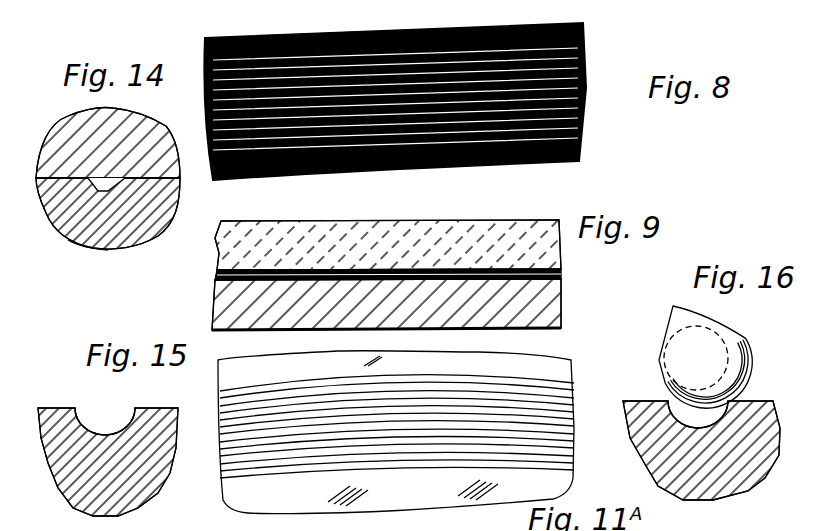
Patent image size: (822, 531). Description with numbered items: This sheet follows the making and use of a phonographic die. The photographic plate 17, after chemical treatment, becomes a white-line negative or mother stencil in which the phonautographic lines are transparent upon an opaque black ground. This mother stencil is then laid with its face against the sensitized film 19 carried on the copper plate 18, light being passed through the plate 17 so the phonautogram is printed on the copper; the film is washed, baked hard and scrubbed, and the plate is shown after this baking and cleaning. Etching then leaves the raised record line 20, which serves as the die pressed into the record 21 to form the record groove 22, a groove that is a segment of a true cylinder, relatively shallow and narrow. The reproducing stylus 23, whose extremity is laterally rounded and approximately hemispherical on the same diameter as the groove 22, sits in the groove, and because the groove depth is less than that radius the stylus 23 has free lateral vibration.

In FIG. 8, the photographic plate 17 is at (568, 42).
In FIG. 9, the photographic plate 17 is at (527, 218).
In FIG. 14, the copper plate 18 is at (58, 128).
In FIG. 9, the copper plate 18 is at (551, 297).
In FIG. 11A, the copper plate 18 is at (582, 365).
In FIG. 9, the sensitized film 19 is at (553, 263).
In FIG. 11A, the sensitized film 19 is at (527, 362).
In FIG. 14, the raised record line 20 is at (100, 183).
In FIG. 14, the record 21 is at (82, 242).
In FIG. 15, the record 21 is at (53, 486).
In FIG. 16, the record 21 is at (738, 473).
In FIG. 14, the record groove 22 is at (51, 210).
In FIG. 15, the record groove 22 is at (82, 418).
In FIG. 16, the record groove 22 is at (698, 416).
In FIG. 16, the reproducing stylus 23 is at (724, 362).